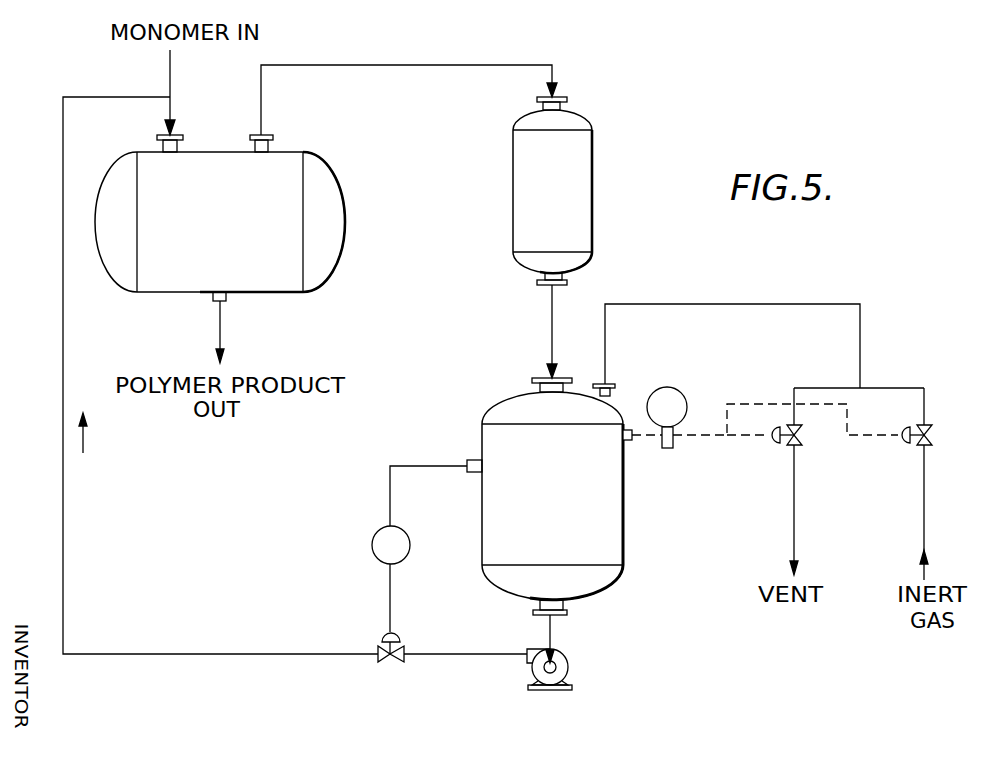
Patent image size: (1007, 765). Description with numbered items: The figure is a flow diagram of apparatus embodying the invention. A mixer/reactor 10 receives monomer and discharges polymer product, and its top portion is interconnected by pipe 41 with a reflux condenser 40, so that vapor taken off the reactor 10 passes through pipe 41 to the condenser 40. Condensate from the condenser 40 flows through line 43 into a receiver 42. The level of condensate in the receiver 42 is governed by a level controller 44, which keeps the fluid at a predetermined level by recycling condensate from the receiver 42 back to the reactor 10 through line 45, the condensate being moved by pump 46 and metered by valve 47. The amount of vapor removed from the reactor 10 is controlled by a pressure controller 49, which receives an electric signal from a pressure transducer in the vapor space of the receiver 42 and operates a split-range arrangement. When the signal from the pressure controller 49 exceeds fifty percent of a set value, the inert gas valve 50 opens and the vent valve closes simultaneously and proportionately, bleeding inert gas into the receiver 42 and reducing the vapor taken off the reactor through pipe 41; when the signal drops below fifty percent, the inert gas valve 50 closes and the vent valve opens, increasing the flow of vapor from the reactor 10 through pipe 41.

The mixer/reactor 10 is at (278, 158).
The reflux condenser 40 is at (583, 192).
The pipe 41 is at (403, 65).
The receiver 42 is at (617, 522).
The line 43 is at (552, 337).
The level controller 44 is at (372, 534).
The line 45 is at (63, 517).
The pump 46 is at (575, 660).
The valve 47 is at (394, 661).
The pressure controller 49 is at (675, 389).
The inert gas valve 50 is at (934, 440).